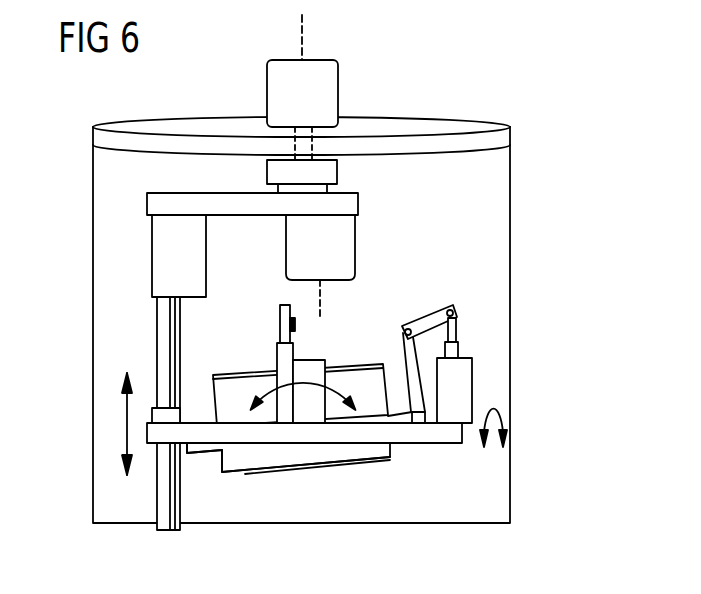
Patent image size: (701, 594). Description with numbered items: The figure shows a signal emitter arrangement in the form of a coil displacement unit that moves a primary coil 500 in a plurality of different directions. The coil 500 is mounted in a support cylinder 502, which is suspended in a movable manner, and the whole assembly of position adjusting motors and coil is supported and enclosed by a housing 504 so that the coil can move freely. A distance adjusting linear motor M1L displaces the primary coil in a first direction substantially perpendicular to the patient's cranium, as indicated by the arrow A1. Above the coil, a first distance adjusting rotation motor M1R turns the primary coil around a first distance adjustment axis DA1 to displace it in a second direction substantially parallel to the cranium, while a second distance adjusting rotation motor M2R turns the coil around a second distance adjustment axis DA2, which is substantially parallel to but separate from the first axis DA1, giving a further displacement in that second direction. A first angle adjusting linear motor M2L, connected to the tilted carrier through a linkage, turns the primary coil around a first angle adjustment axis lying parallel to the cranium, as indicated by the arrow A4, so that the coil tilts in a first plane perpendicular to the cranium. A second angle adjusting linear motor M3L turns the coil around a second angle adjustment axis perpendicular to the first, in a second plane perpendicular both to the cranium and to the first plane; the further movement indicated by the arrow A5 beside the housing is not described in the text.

The housing 504 is at (502, 193).
The first distance adjustment axis DA1 is at (322, 87).
The first distance adjusting rotation motor M1R is at (330, 84).
The distance adjusting linear motor M1L is at (196, 248).
The second distance adjusting rotation motor M2R is at (347, 247).
The second distance adjustment axis DA2 is at (345, 302).
The second angle adjusting linear motor M3L is at (310, 355).
The arrow A4 is at (266, 386).
The first angle adjusting linear motor M2L is at (462, 364).
The rotational movement A5 is at (508, 412).
The arrow A1 is at (126, 423).
The primary coil 500 is at (333, 469).
The support cylinder 502 is at (257, 462).